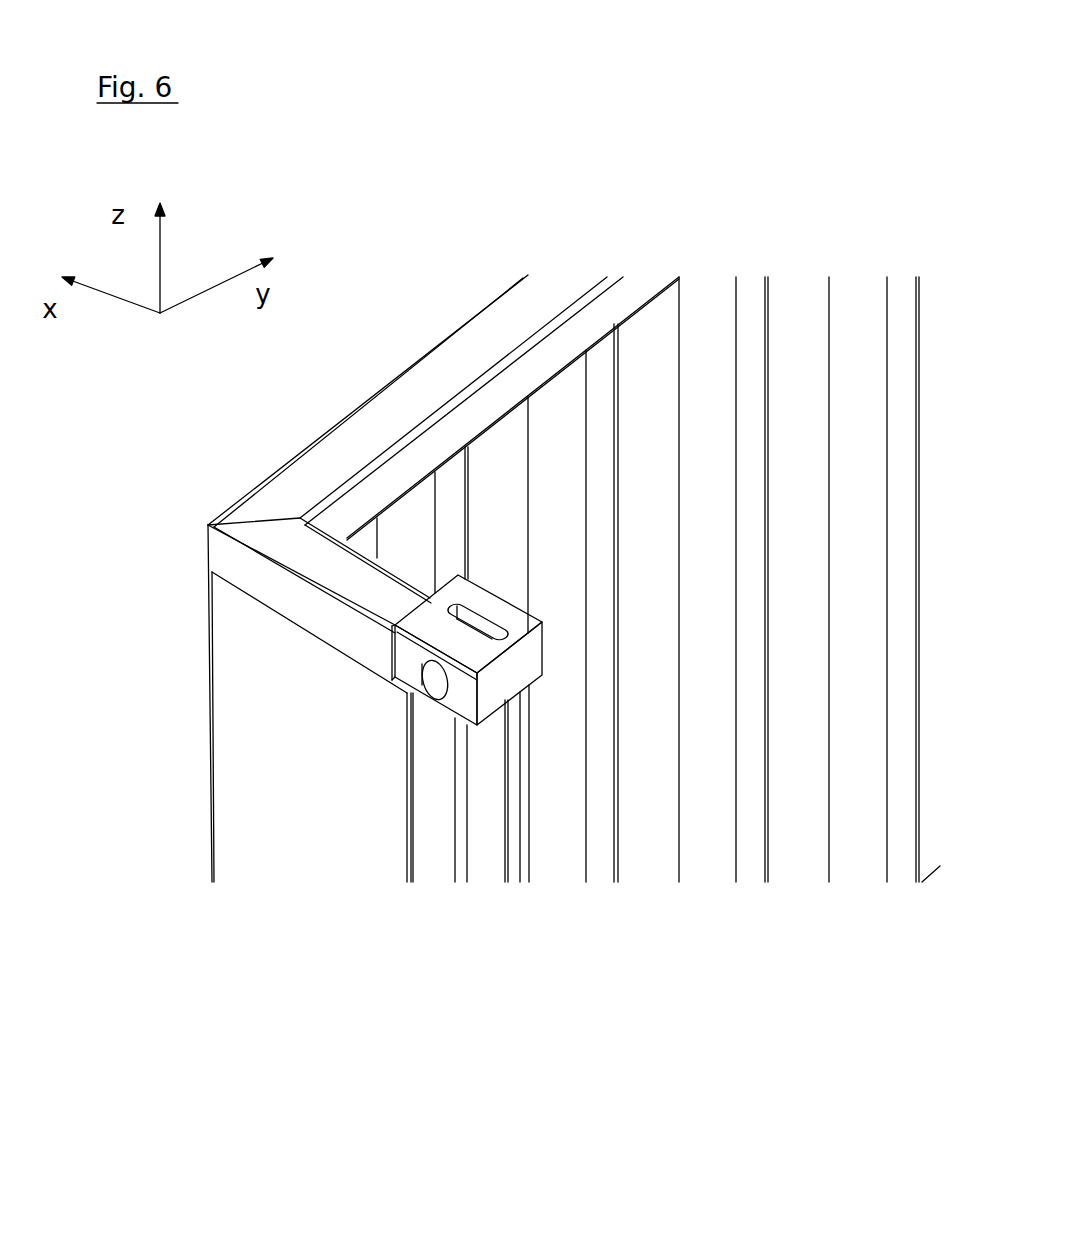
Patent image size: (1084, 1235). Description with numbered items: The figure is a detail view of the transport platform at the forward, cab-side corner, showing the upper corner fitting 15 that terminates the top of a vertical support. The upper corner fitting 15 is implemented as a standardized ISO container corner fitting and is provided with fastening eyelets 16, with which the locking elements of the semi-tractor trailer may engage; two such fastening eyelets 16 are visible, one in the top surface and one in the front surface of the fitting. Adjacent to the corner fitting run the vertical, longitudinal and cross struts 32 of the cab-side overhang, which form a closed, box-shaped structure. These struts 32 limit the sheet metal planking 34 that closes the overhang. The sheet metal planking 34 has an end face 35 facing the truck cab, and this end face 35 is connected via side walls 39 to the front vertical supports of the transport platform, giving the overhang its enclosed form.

The upper corner fitting 15 is at (517, 670).
The fastening eyelet 16 is at (430, 660).
The vertical, longitudinal and cross struts 32 is at (437, 740).
The sheet metal planking 34 is at (400, 1098).
The end face 35 is at (607, 778).
The side walls 39 is at (322, 865).